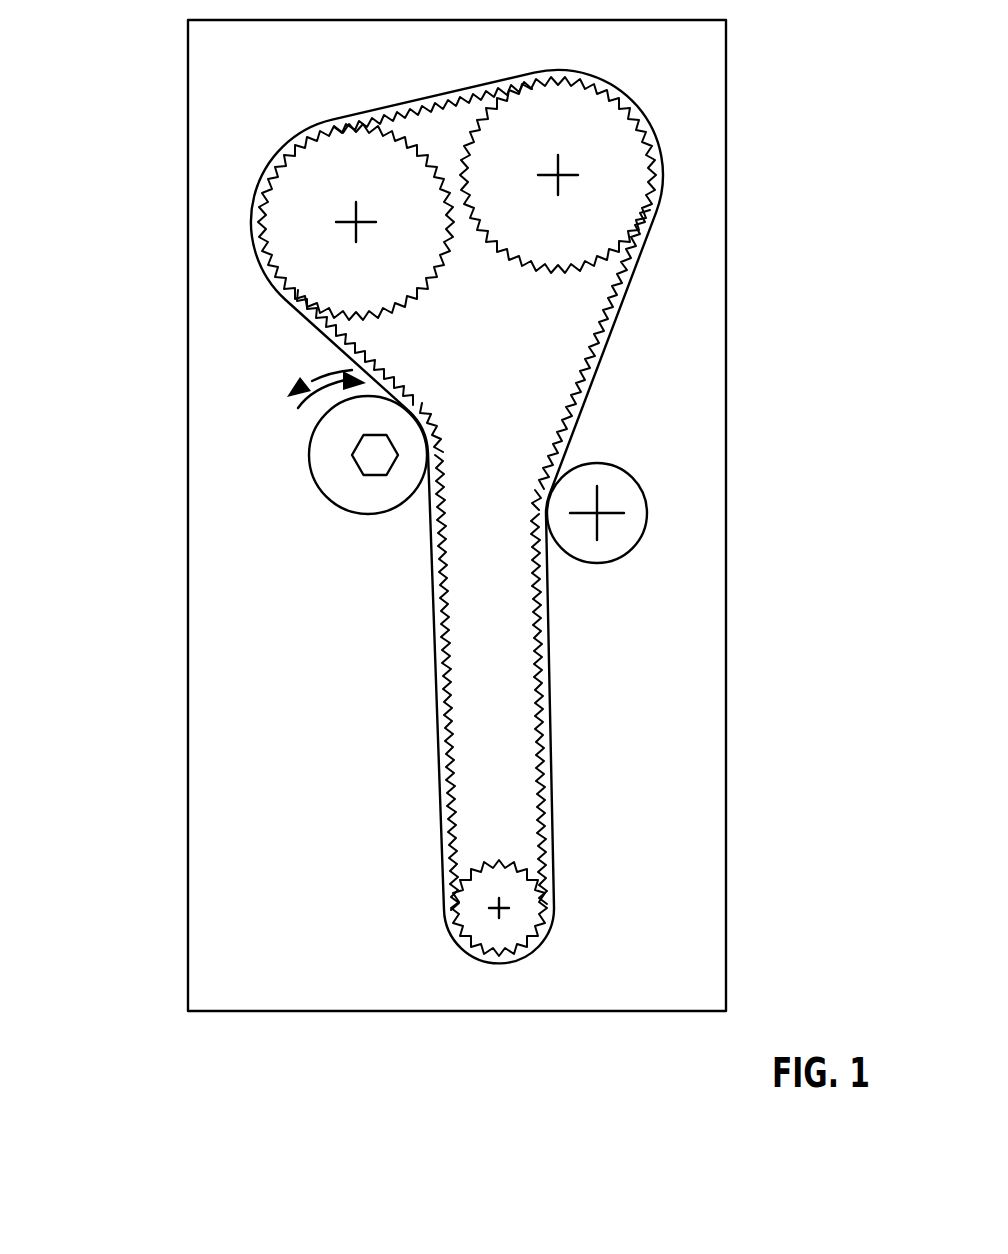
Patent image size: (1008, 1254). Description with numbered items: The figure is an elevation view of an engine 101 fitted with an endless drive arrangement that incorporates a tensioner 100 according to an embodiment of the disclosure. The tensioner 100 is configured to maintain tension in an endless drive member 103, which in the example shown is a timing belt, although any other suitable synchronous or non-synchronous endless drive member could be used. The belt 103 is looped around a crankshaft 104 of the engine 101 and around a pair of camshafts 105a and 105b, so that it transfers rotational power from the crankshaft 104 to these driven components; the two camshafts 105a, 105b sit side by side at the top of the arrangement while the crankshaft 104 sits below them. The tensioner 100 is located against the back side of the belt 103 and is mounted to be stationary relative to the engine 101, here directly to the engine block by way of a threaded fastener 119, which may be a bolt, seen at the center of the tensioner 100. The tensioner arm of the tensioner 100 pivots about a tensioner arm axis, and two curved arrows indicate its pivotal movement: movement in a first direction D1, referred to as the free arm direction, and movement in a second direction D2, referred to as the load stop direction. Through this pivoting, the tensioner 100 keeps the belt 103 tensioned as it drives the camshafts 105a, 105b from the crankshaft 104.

The tensioner 100 is at (325, 479).
The engine 101 is at (187, 738).
The endless drive member 103 is at (441, 743).
The crankshaft 104 is at (473, 890).
The camshaft 105a is at (292, 233).
The camshaft 105b is at (625, 169).
The threaded fastener 119 is at (352, 447).
The first direction D1 is at (330, 388).
The second direction D2 is at (345, 380).